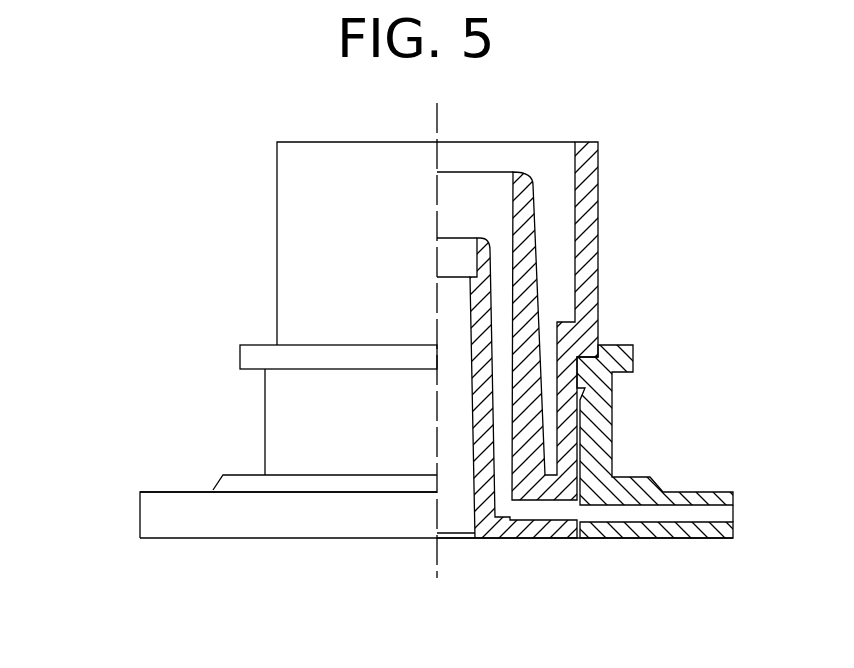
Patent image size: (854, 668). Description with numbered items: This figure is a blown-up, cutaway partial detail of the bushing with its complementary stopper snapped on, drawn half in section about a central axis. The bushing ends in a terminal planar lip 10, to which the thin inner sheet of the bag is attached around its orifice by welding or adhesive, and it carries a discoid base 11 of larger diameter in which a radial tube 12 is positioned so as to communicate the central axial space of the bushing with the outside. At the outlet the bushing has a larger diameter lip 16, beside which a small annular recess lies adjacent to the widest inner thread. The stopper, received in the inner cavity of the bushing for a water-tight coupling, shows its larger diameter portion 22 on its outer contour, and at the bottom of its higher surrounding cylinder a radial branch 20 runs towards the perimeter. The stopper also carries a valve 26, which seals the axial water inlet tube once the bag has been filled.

The terminal planar lip 10 is at (223, 542).
The discoid base 11 is at (167, 514).
The radial tube 12 is at (650, 540).
The larger diameter lip 16 is at (250, 356).
The radial branch 20 is at (533, 528).
The larger diameter portion 22 is at (297, 237).
The valve 26 is at (452, 538).